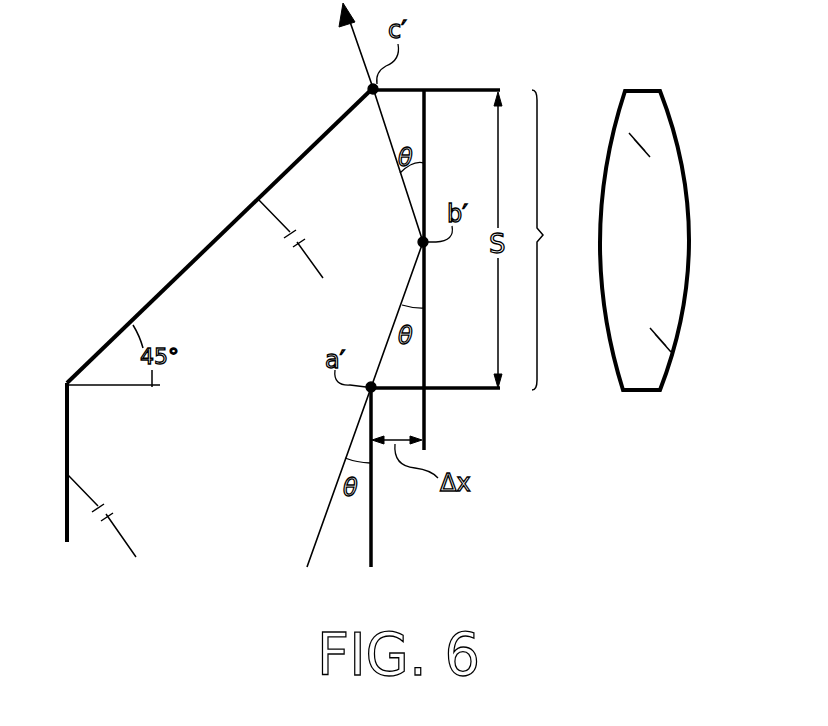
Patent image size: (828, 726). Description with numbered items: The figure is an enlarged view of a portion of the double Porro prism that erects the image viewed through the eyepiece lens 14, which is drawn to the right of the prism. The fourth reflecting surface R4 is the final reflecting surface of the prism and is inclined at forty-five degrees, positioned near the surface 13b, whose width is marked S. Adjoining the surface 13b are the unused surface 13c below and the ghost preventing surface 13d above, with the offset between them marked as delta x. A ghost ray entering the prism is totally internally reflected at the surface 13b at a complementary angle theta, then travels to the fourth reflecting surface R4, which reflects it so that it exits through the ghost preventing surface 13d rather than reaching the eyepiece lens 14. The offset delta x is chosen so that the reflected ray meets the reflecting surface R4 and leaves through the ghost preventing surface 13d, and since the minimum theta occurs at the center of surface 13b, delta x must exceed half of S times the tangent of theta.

The surface 13b is at (563, 240).
The unused surface 13c is at (375, 508).
The ghost preventing surface 13d is at (419, 90).
The eyepiece lens 14 is at (640, 90).
The fourth reflecting surface R4 is at (273, 183).